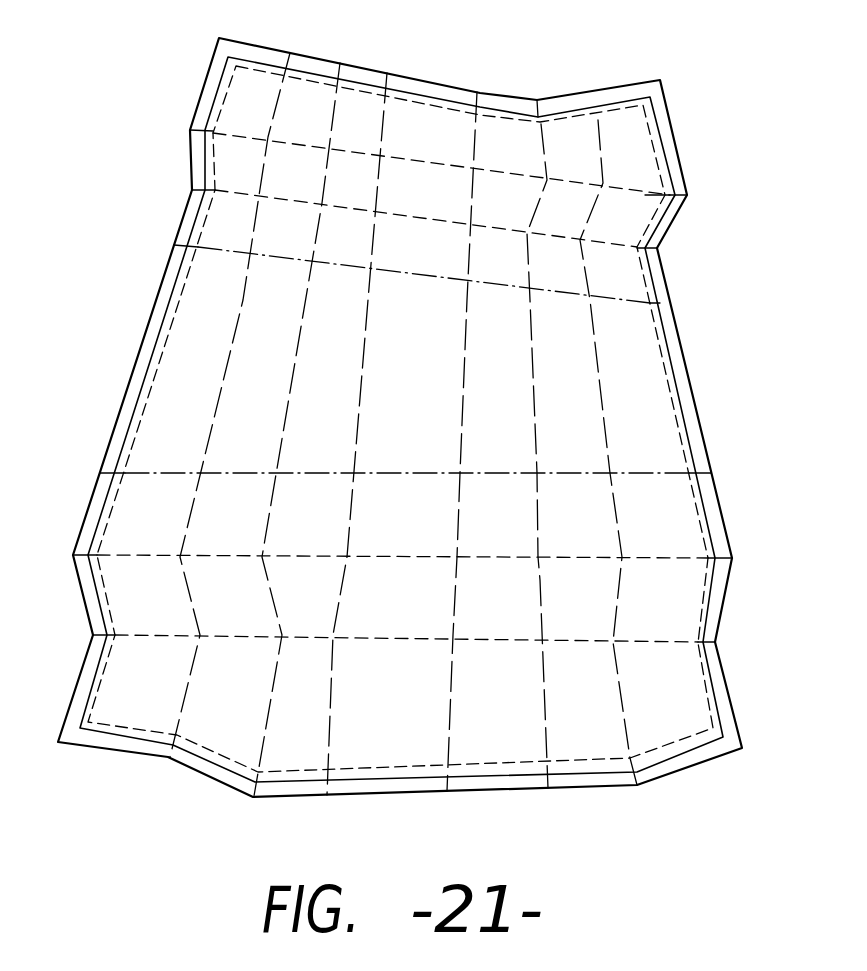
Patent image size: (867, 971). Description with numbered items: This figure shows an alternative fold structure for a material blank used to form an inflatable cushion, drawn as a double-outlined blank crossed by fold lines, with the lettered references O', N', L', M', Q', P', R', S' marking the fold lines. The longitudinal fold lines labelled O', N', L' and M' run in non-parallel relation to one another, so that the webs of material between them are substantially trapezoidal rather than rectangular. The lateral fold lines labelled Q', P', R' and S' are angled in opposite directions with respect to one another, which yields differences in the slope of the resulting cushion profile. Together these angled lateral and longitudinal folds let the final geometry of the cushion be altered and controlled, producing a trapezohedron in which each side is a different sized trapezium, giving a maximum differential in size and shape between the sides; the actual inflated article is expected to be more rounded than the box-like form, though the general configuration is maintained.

The fold line O' is at (230, 380).
The fold line N' is at (298, 406).
The fold line L' is at (546, 415).
The fold line M' is at (608, 412).
The fold line Q' is at (469, 164).
The fold line P' is at (465, 220).
The fold line R' is at (437, 532).
The fold line S' is at (438, 621).